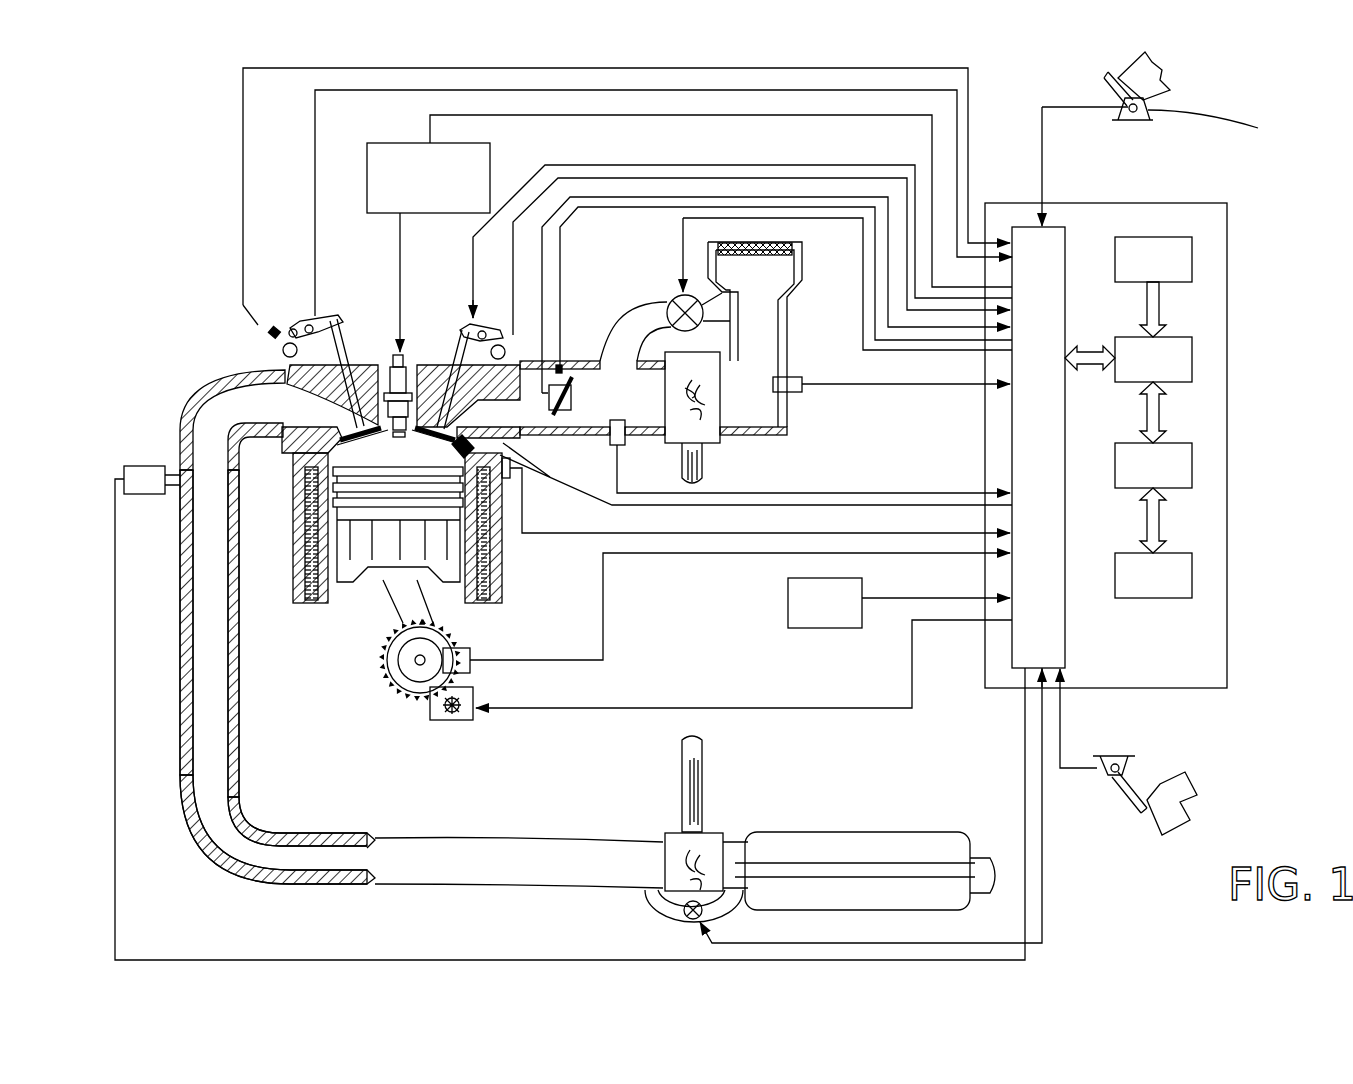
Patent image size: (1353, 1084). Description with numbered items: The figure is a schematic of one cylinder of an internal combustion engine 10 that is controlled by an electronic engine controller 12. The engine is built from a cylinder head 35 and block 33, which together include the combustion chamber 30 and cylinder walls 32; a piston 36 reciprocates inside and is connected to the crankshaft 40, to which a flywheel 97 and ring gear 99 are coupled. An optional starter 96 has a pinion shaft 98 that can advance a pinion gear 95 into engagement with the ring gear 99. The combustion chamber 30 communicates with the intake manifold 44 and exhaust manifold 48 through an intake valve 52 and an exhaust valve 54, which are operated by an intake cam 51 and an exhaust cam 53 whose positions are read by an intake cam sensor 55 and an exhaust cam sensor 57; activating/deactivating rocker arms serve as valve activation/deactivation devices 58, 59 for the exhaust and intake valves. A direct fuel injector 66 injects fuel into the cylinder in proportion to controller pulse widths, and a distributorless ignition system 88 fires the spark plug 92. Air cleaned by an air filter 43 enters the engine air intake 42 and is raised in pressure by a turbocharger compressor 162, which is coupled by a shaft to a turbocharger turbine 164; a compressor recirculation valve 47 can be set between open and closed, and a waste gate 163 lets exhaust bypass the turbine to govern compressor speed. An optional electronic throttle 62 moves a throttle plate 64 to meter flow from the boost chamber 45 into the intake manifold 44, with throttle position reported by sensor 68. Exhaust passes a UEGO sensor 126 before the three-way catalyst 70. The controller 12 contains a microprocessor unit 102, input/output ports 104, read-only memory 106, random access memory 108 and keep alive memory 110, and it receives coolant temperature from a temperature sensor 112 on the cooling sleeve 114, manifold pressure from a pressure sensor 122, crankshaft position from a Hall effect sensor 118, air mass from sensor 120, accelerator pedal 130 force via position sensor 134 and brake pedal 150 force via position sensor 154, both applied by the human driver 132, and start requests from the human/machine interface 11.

The internal combustion engine 10 is at (200, 230).
The human/machine interface 11 is at (899, 603).
The electronic engine controller 12 is at (1228, 205).
The combustion chamber 30 is at (298, 566).
The cylinder walls 32 is at (350, 580).
The block 33 is at (290, 490).
The cylinder head 35 is at (262, 332).
The piston 36 is at (380, 560).
The crankshaft 40 is at (395, 688).
The engine air intake 42 is at (620, 265).
The air filter 43 is at (780, 256).
The intake manifold 44 is at (602, 399).
The boost chamber 45 is at (626, 401).
The compressor recirculation valve 47 is at (673, 298).
The exhaust manifold 48 is at (279, 624).
The intake cam 51 is at (506, 345).
The intake valve 52 is at (450, 412).
The exhaust cam 53 is at (292, 326).
The exhaust valve 54 is at (284, 352).
The intake cam sensor 55 is at (505, 330).
The exhaust cam sensor 57 is at (290, 340).
The valve activation/deactivation device 58 is at (316, 318).
The valve activation/deactivation device 59 is at (468, 328).
The electronic throttle 62 is at (570, 392).
The throttle plate 64 is at (562, 408).
The direct fuel injector 66 is at (505, 468).
The throttle position sensor 68 is at (562, 364).
The three-way catalyst 70 is at (775, 832).
The distributorless ignition system 88 is at (490, 150).
The spark plug 92 is at (406, 340).
The pinion gear 95 is at (455, 715).
The starter 96 is at (466, 720).
The flywheel 97 is at (390, 665).
The pinion shaft 98 is at (440, 712).
The ring gear 99 is at (408, 700).
The microprocessor unit 102 is at (1192, 360).
The input/output ports 104 is at (1065, 232).
The read-only memory 106 is at (1192, 255).
The random access memory 108 is at (1192, 465).
The keep alive memory 110 is at (1192, 577).
The temperature sensor 112 is at (756, 495).
The cooling sleeve 114 is at (487, 553).
The Hall effect sensor 118 is at (470, 648).
The air mass sensor 120 is at (795, 378).
The pressure sensor 122 is at (608, 440).
The Universal Exhaust Gas Oxygen sensor 126 is at (124, 470).
The accelerator pedal 130 is at (1108, 85).
The human driver 132 is at (1160, 72).
The position sensor 134 is at (1222, 127).
The brake pedal 150 is at (1140, 815).
The position sensor 154 is at (1105, 765).
The turbocharger compressor 162 is at (692, 420).
The waste gate 163 is at (684, 922).
The turbocharger turbine 164 is at (675, 833).